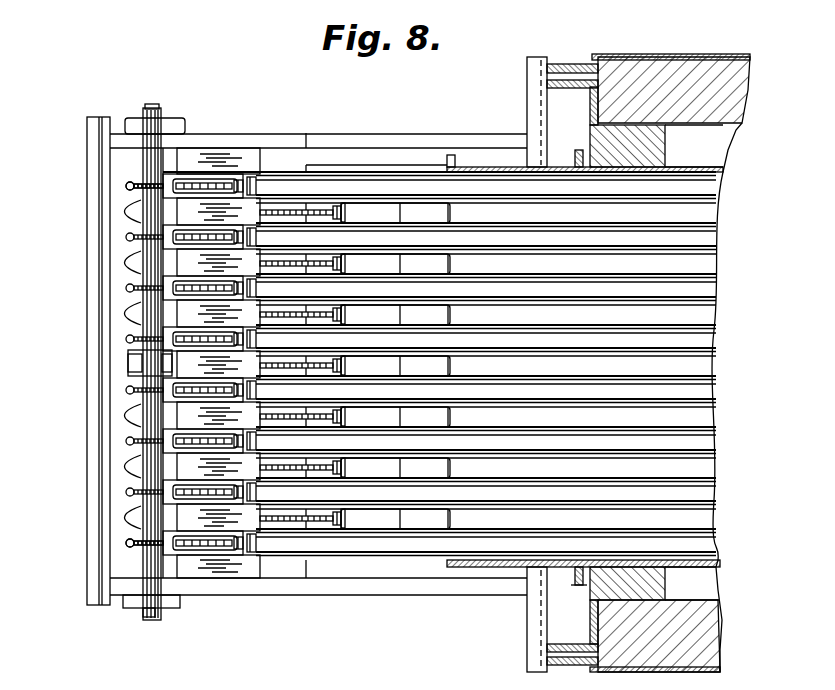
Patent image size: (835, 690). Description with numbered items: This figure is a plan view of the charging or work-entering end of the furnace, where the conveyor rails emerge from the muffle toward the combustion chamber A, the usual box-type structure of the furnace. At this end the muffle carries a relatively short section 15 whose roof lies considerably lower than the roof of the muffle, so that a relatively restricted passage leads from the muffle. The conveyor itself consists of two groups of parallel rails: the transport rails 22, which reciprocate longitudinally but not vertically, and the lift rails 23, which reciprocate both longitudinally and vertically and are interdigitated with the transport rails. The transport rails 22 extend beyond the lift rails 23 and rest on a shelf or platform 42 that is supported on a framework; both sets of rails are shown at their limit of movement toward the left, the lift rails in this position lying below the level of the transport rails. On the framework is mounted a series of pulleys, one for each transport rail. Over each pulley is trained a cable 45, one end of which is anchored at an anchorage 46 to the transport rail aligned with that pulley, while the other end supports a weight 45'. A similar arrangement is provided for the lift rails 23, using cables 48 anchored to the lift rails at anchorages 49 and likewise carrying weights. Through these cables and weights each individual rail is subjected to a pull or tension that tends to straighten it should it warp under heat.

The combustion chamber A is at (702, 50).
The relatively short section 15 is at (483, 165).
The transport rails 22 is at (194, 168).
The lift rails 23 is at (398, 190).
The shelf or platform 42 is at (250, 160).
The cable 45 is at (100, 364).
The weight 45' is at (110, 355).
The cable anchorage 46 is at (238, 180).
The cable 48 is at (297, 522).
The cable anchorage 49 is at (340, 205).